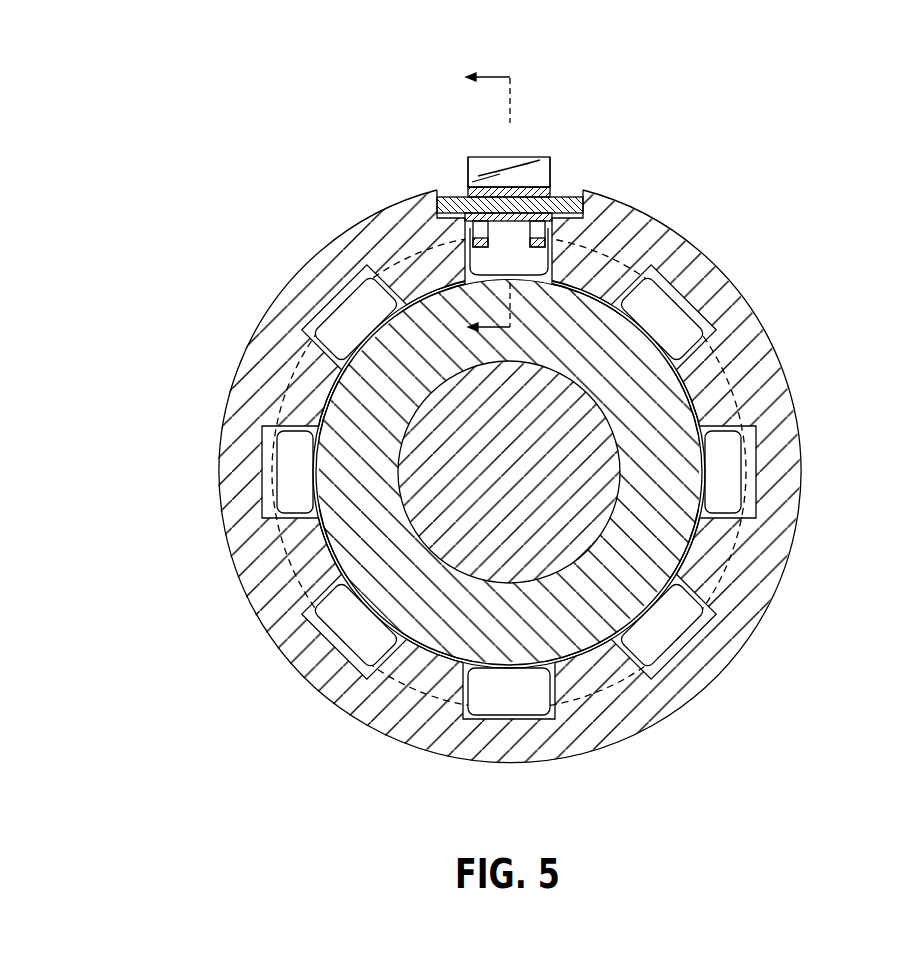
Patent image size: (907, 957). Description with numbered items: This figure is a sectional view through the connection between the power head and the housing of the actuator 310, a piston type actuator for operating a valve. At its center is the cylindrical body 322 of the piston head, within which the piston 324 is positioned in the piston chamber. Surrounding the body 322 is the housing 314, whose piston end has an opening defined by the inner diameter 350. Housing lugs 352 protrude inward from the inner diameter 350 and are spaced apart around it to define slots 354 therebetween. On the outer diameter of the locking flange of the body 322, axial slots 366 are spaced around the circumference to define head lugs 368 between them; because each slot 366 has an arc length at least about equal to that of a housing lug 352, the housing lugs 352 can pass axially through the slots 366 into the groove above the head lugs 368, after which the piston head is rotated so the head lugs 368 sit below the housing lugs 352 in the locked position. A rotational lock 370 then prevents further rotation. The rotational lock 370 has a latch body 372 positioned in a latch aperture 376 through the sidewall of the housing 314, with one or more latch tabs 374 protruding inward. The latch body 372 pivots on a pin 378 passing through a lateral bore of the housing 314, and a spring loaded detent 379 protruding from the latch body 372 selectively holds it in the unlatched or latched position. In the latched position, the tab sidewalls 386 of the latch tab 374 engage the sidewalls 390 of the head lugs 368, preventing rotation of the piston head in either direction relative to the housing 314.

The actuator 310 is at (512, 398).
The housing 314 is at (242, 365).
The cylindrical body 322 is at (357, 550).
The piston 324 is at (663, 660).
The inner diameter 350 is at (268, 465).
The housing lugs 352 is at (520, 545).
The slots 354 is at (743, 483).
The slots 366 is at (310, 487).
The head lugs 368 is at (373, 646).
The rotational lock 370 is at (512, 174).
The latch body 372 is at (537, 162).
The latch tabs 374 is at (550, 237).
The latch aperture 376 is at (553, 185).
The pin 378 is at (462, 187).
The detent 379 is at (468, 172).
The tab sidewalls 386 is at (465, 233).
The sidewalls 390 is at (480, 258).